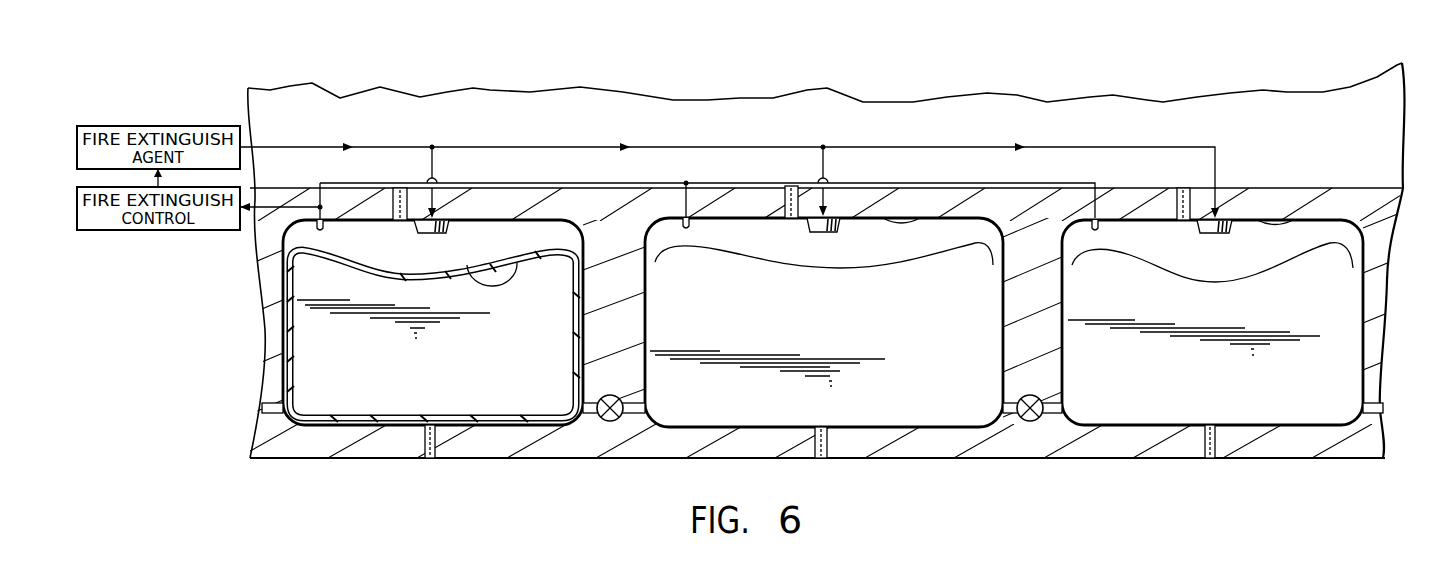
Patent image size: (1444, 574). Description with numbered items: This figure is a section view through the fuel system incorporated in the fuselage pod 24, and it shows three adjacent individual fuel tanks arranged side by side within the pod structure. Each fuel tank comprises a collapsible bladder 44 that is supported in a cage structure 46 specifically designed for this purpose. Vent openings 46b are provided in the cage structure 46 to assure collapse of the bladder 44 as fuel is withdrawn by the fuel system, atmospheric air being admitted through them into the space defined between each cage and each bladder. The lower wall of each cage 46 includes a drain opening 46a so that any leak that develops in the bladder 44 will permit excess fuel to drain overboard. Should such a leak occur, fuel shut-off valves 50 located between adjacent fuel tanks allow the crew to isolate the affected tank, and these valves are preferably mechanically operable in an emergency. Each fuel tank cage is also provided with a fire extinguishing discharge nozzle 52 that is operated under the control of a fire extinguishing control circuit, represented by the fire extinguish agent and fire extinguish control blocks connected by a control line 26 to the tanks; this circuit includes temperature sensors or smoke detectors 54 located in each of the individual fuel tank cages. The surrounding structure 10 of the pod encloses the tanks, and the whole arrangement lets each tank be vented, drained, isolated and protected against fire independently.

The vessel hull 10 is at (1405, 143).
The fuselage pod 24 is at (1394, 281).
The control signal line 26 is at (748, 188).
The collapsible bladder 44 is at (512, 272).
The cage structure 46 is at (512, 218).
The drain opening 46a is at (432, 444).
The vent openings 46b is at (399, 222).
The fuel shut-off valves 50 is at (613, 421).
The fire extinguishing discharge nozzles 52 is at (451, 227).
The temperature sensors or smoke detectors 54 is at (325, 228).